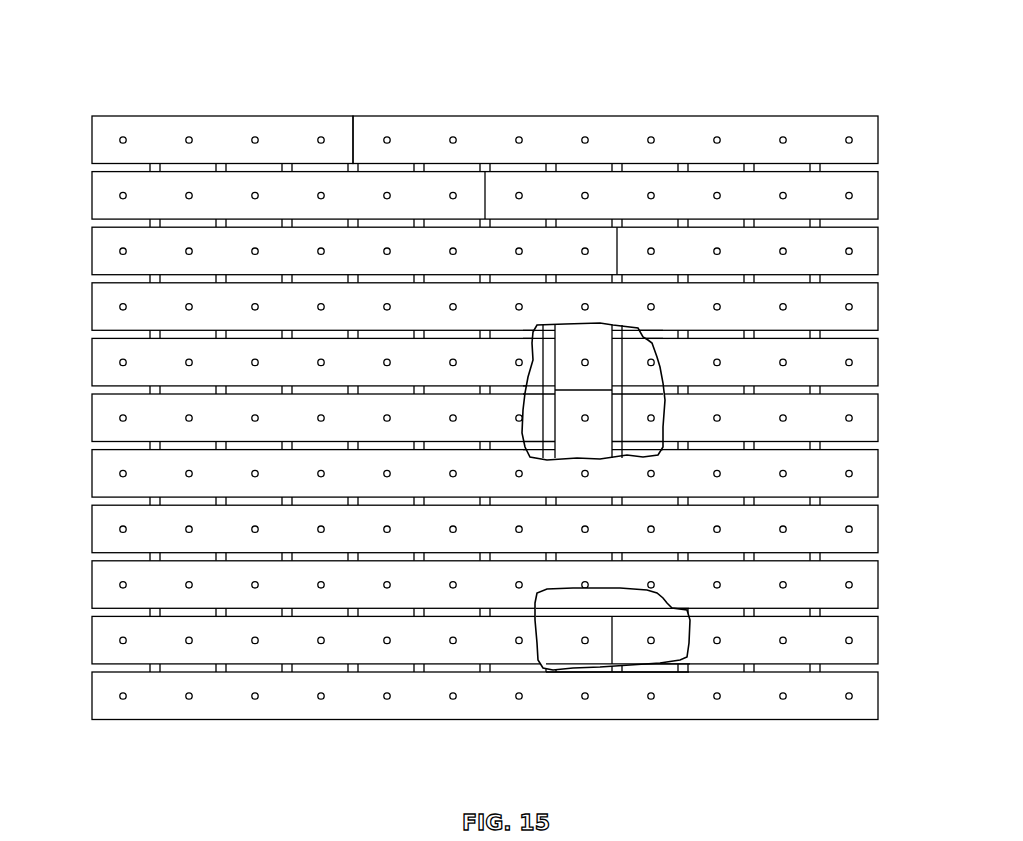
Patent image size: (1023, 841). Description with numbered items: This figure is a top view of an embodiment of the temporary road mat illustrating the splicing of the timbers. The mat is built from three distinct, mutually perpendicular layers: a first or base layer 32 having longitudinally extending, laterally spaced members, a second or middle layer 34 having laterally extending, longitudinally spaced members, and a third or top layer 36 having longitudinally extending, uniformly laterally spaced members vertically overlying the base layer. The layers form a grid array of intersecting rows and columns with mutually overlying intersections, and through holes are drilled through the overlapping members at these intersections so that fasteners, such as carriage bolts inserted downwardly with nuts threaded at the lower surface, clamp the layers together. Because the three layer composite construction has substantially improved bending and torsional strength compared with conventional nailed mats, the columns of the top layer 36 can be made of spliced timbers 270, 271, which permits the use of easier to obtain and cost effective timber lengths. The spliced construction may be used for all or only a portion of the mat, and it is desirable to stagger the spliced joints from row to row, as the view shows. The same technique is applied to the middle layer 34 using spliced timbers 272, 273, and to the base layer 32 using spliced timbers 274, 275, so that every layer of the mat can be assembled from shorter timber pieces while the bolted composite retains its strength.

The third or top layer 36 is at (107, 425).
The spliced timber 270 is at (286, 135).
The spliced timber 271 is at (458, 122).
The second or middle layer 34 is at (744, 384).
The spliced timber 272 is at (600, 372).
The spliced timber 273 is at (603, 416).
The first or base layer 32 is at (717, 668).
The left patch plank 275 is at (597, 652).
The spliced timber 274 is at (658, 652).